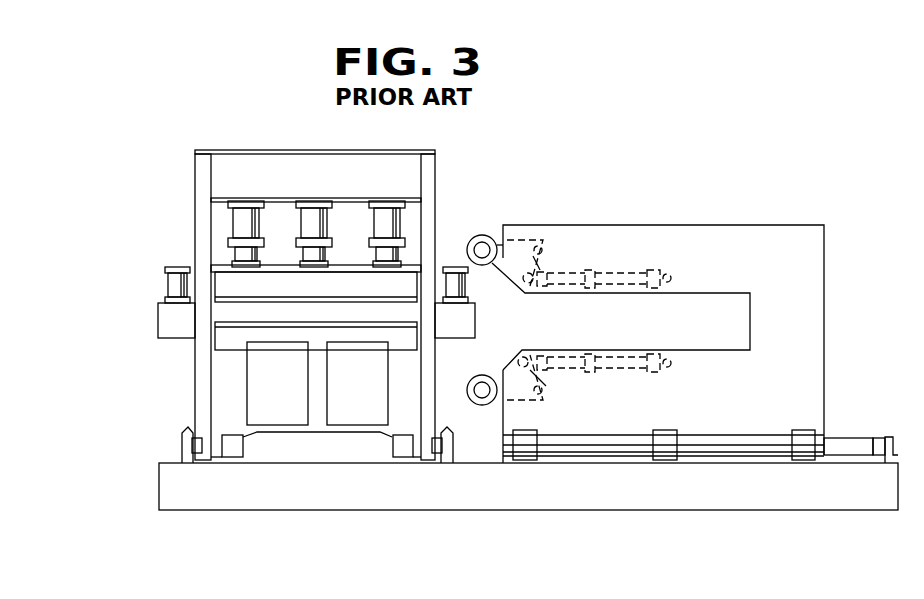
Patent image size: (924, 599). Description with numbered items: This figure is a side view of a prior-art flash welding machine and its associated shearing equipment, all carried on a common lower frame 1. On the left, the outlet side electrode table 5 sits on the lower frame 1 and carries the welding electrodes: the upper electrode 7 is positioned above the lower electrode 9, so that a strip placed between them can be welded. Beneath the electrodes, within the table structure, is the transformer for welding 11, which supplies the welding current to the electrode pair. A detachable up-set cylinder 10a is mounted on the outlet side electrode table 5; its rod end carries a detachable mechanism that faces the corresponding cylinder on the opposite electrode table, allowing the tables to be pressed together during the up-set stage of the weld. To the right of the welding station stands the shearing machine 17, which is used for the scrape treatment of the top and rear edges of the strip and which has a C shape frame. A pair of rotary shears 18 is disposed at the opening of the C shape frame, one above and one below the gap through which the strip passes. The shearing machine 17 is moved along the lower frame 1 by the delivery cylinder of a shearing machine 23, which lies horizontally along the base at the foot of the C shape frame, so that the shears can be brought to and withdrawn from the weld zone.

The lower frame 1 is at (510, 510).
The outlet side electrode table 5 is at (291, 150).
The upper electrode 7 is at (268, 302).
The lower electrode 9 is at (343, 324).
The detachable up-set cylinder 10a is at (157, 325).
The transformer for welding 11 is at (347, 407).
The shearing machine 17 is at (667, 225).
The pair of rotary shears 18 is at (481, 236).
The delivery cylinder of a shearing machine 23 is at (848, 438).